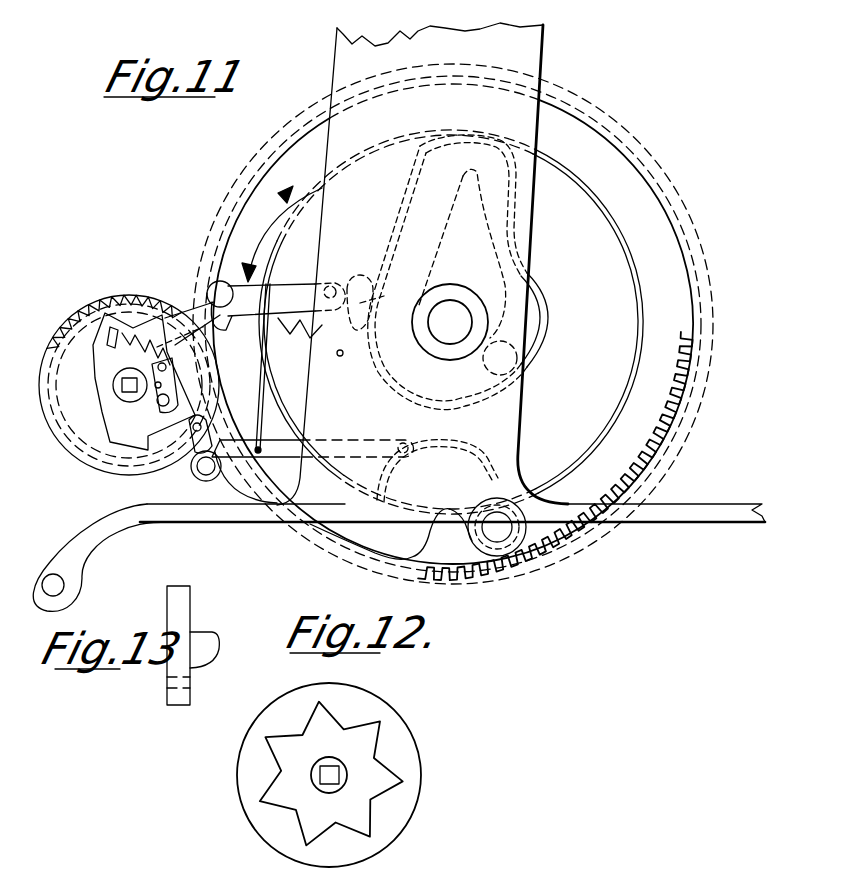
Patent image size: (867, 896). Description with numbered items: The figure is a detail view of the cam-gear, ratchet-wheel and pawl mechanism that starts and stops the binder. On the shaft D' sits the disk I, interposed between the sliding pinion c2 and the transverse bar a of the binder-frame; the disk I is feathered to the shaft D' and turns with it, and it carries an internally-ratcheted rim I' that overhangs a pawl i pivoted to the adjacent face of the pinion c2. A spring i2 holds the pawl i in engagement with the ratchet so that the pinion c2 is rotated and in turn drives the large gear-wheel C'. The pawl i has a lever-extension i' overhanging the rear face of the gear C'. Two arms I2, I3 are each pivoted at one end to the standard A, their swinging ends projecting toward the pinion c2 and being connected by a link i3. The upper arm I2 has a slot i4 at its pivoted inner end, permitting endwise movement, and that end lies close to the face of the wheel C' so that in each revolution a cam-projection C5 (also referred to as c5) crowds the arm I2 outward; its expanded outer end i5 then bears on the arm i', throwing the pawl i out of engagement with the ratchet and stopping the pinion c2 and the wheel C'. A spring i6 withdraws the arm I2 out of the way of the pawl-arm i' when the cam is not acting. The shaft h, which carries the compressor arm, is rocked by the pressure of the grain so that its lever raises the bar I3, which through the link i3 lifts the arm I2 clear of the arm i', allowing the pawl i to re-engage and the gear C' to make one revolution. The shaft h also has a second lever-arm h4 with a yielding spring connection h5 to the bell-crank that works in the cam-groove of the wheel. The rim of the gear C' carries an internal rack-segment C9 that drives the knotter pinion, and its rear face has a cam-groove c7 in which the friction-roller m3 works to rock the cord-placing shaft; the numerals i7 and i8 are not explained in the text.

In FIG. 11, the standard A is at (453, 324).
In FIG. 11, the gear-wheel C' is at (451, 322).
In FIG. 11, the sliding pinion c2 is at (93, 390).
In FIG. 11, the cam-projection C5 is at (404, 500).
In FIG. 11, the cam-projection c5 is at (383, 296).
In FIG. 11, the cam-groove c7 is at (483, 243).
In FIG. 11, the internal rack-segment C9 is at (453, 332).
In FIG. 11, the friction-roller m3 is at (522, 374).
In FIG. 11, the disk I is at (114, 311).
In FIG. 12, the disk I is at (329, 775).
In FIG. 11, the internally-ratcheted rim I' is at (146, 347).
In FIG. 12, the internally-ratcheted rim I' is at (331, 774).
In FIG. 11, the upper arm I2 is at (278, 306).
In FIG. 11, the lower arm I3 is at (313, 449).
In FIG. 11, the pawl i is at (165, 385).
In FIG. 13, the pawl i is at (204, 650).
In FIG. 11, the lever-extension i' is at (188, 311).
In FIG. 13, the lever-extension i' is at (185, 643).
In FIG. 11, the spring i2 is at (134, 367).
In FIG. 11, the link i3 is at (256, 368).
In FIG. 11, the slot i4 is at (365, 290).
In FIG. 11, the expanded outer end i5 is at (220, 294).
In FIG. 11, the spring i6 is at (300, 335).
In FIG. 11, the pin i7 is at (336, 353).
In FIG. 11, the pinion i8 is at (496, 533).
In FIG. 11, the shaft h is at (200, 470).
In FIG. 11, the second lever-arm h4 is at (200, 434).
In FIG. 11, the yielding or spring connection h5 is at (246, 477).
In FIG. 11, the transverse bar a is at (399, 557).
In FIG. 11, the shaft D' is at (144, 381).